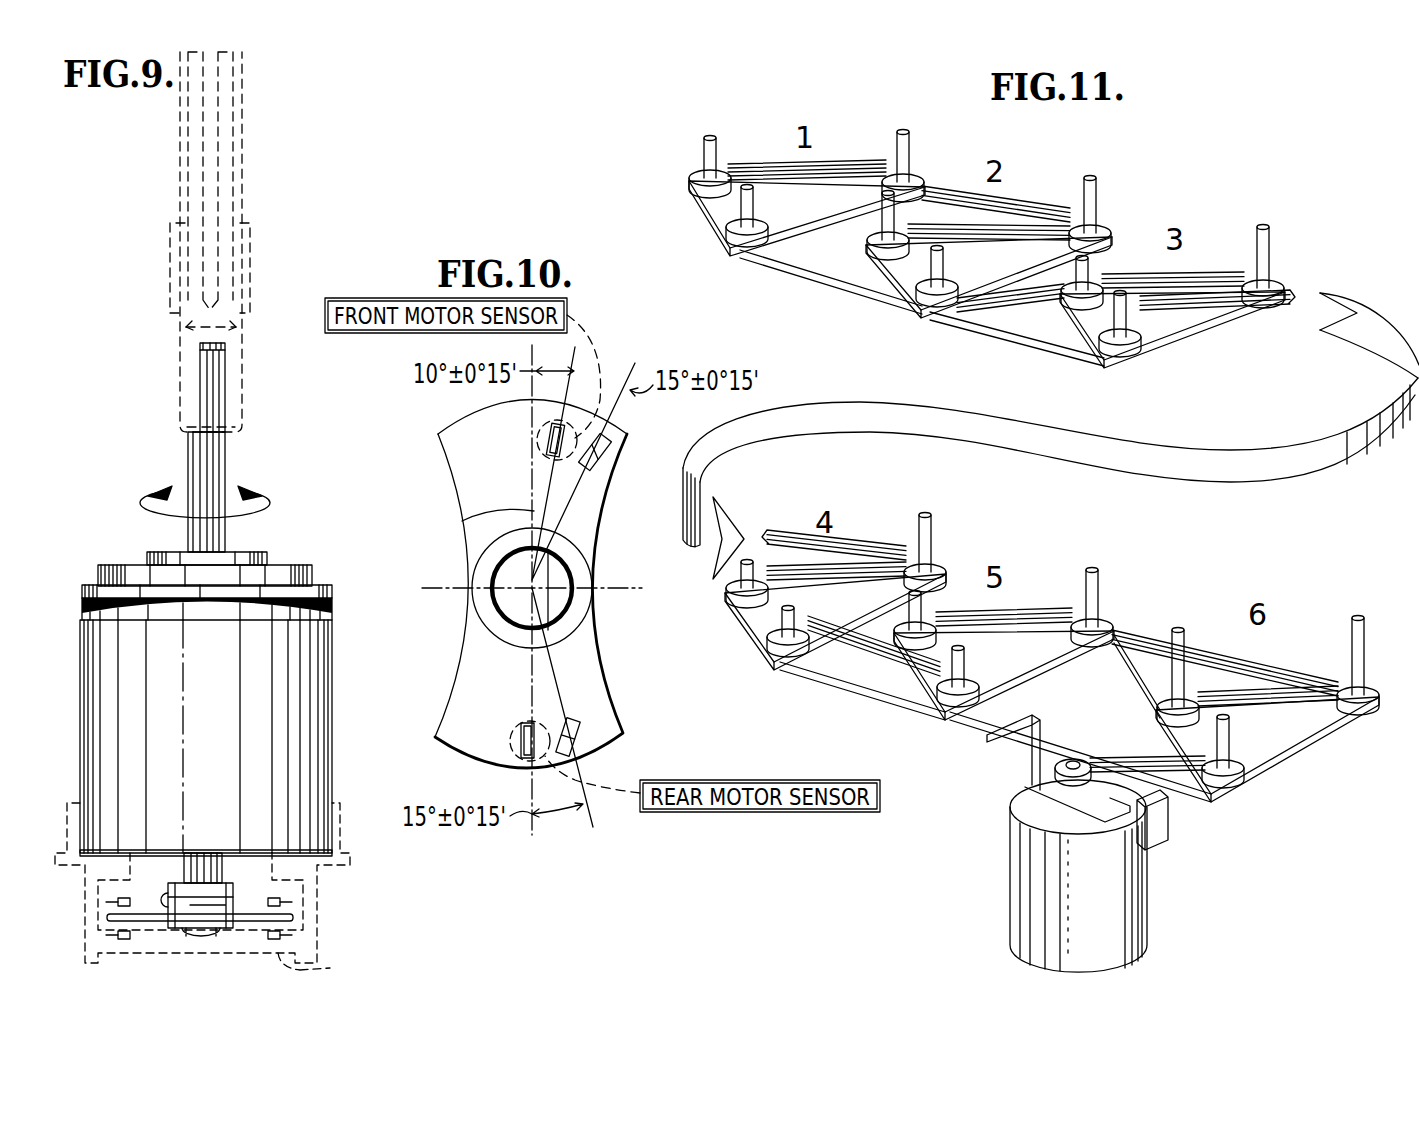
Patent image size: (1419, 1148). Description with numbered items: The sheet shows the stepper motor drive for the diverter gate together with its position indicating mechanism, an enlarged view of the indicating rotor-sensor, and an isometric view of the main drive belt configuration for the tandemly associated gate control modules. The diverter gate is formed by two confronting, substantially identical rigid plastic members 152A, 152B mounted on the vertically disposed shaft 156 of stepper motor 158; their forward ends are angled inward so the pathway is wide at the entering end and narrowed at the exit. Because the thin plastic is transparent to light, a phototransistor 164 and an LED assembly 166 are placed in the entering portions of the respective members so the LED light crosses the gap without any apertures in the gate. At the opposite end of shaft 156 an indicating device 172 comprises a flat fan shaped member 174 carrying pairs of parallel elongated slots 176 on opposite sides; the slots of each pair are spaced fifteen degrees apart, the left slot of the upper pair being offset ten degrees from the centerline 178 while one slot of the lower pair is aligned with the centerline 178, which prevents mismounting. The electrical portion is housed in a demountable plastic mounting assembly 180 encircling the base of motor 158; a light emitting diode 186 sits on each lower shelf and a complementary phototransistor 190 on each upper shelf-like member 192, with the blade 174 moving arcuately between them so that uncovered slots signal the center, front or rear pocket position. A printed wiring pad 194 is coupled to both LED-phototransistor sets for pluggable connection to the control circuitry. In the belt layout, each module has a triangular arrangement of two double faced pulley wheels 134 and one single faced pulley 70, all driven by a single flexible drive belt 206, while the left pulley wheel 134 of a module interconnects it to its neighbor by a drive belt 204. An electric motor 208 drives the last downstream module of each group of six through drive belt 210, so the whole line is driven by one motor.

In FIG. 9, the rectangular plastic member 152A is at (225, 157).
In FIG. 9, the rectangular plastic member 152B is at (190, 157).
In FIG. 9, the phototransistor 164 is at (172, 260).
In FIG. 9, the LED assembly 166 is at (248, 260).
In FIG. 9, the motor shaft 156 is at (210, 380).
In FIG. 9, the stepper motor 158 is at (225, 699).
In FIG. 9, the fan shaped member 174 is at (149, 914).
In FIG. 10, the fan shaped member 174 is at (593, 524).
In FIG. 10, the slots 176 is at (600, 456).
In FIG. 10, the centerline 178 is at (462, 524).
In FIG. 9, the mounting assembly 180 is at (340, 848).
In FIG. 9, the light emitting diode 186 is at (105, 937).
In FIG. 10, the light emitting diode 186 is at (545, 445).
In FIG. 9, the phototransistor 190 is at (105, 905).
In FIG. 10, the phototransistor 190 is at (519, 590).
In FIG. 9, the upper shelf-like member 192 is at (98, 887).
In FIG. 9, the indicating device 172 is at (322, 911).
In FIG. 9, the printed wiring pad 194 is at (330, 968).
In FIG. 11, the single faced drive pulley 70 is at (690, 178).
In FIG. 11, the dual surface pulley wheel 134 is at (922, 172).
In FIG. 11, the drive belt 204 is at (1018, 200).
In FIG. 11, the flexible drive belt 206 is at (742, 162).
In FIG. 11, the electric motor 208 is at (1097, 898).
In FIG. 11, the drive belt 210 is at (1187, 790).